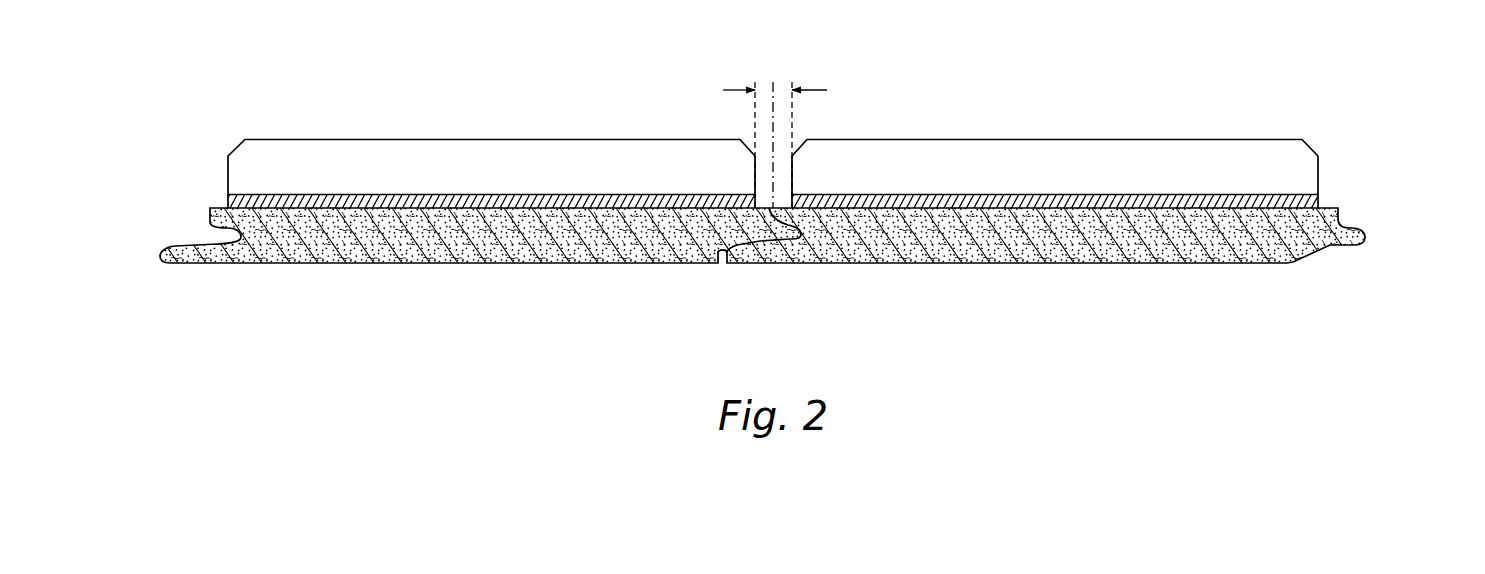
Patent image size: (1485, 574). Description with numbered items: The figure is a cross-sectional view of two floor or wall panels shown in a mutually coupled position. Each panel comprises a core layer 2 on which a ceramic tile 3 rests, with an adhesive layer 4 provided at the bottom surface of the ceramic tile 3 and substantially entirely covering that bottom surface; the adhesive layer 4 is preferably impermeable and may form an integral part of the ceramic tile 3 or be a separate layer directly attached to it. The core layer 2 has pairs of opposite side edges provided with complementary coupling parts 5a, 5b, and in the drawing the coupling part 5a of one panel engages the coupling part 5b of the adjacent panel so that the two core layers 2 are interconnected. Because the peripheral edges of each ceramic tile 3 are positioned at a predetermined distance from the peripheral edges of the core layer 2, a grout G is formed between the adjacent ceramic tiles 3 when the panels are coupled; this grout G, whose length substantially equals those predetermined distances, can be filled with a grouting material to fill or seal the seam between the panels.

The core layer 2 is at (496, 242).
The ceramic tile 3 is at (452, 163).
The adhesive layer 4 is at (547, 207).
The coupling part 5a is at (742, 262).
The coupling part 5b is at (770, 260).
The grout G is at (775, 130).